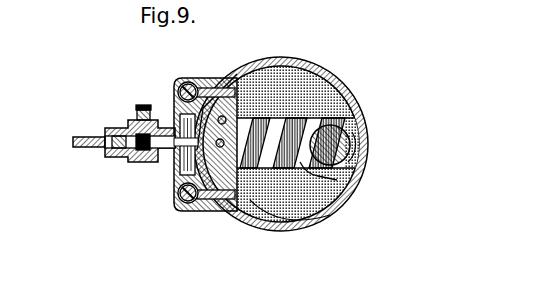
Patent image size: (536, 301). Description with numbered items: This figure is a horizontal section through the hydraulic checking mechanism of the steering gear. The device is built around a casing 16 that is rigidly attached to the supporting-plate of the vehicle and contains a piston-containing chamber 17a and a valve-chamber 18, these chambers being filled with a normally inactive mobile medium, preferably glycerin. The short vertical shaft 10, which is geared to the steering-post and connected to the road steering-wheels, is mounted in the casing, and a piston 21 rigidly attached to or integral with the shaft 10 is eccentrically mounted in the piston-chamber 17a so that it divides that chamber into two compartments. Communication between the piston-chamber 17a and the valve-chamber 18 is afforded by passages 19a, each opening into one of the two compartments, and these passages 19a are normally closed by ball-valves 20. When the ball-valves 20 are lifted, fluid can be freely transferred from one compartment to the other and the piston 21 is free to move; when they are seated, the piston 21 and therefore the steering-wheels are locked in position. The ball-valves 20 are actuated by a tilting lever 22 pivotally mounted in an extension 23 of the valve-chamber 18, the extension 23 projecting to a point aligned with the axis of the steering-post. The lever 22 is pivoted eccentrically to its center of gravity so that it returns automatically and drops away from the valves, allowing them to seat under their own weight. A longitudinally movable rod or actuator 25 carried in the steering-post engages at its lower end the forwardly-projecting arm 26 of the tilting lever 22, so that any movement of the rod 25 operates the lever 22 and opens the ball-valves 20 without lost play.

The shaft 10 is at (368, 152).
The casing 16 is at (323, 68).
The piston-containing chamber 17a is at (297, 222).
The valve-chamber 18 is at (173, 170).
The passages 19a is at (233, 58).
The ball-valves 20 is at (182, 84).
The piston 21 is at (337, 180).
The tilting lever 22 is at (162, 138).
The extension of the valve-chamber 23 is at (120, 160).
The rod or actuator 25 is at (123, 134).
The forwardly-projecting arm 26 is at (104, 136).